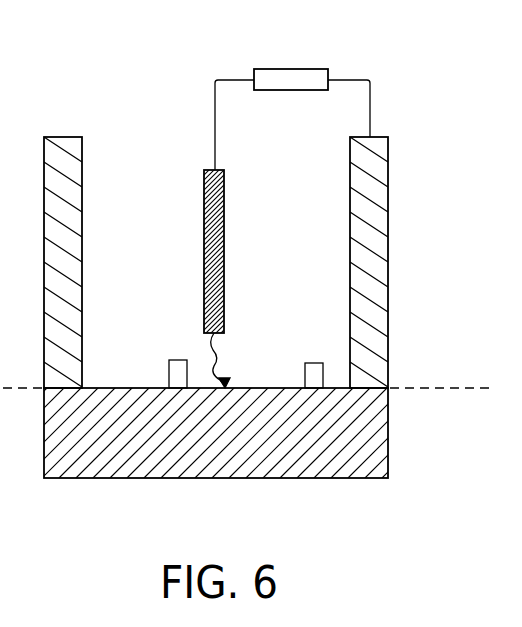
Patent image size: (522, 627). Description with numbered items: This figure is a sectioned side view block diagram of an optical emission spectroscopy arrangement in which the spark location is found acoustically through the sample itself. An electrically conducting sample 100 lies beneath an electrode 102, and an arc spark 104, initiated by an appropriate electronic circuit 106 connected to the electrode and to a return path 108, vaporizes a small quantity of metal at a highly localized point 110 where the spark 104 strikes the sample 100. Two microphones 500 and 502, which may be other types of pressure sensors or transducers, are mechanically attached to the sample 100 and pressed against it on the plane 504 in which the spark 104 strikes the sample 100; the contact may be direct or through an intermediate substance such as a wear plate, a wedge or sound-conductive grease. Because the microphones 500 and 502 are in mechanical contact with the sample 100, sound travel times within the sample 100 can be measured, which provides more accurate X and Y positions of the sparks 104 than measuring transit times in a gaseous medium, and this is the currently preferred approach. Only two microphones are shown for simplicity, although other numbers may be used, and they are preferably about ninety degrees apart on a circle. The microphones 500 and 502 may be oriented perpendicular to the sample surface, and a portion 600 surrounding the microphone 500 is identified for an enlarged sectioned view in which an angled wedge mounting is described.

The sample 100 is at (200, 478).
The electrode 102 is at (204, 247).
The arc spark 104 is at (224, 353).
The electronic circuit 106 is at (290, 69).
The return path 108 is at (388, 262).
The localized point 110 is at (229, 386).
The microphone 500 is at (312, 363).
The microphone 502 is at (178, 360).
The plane 504 is at (434, 387).
The portion 600 is at (315, 314).